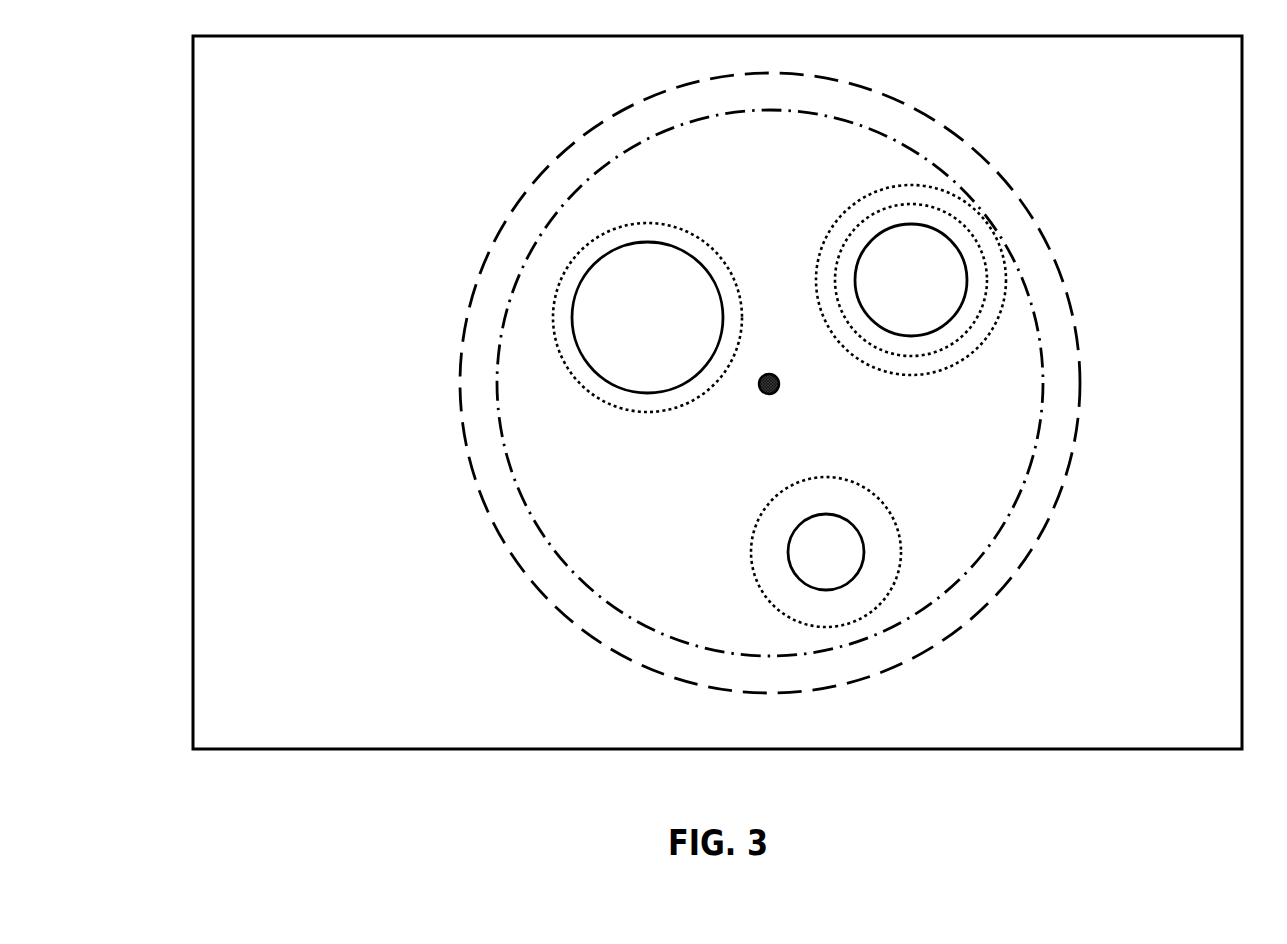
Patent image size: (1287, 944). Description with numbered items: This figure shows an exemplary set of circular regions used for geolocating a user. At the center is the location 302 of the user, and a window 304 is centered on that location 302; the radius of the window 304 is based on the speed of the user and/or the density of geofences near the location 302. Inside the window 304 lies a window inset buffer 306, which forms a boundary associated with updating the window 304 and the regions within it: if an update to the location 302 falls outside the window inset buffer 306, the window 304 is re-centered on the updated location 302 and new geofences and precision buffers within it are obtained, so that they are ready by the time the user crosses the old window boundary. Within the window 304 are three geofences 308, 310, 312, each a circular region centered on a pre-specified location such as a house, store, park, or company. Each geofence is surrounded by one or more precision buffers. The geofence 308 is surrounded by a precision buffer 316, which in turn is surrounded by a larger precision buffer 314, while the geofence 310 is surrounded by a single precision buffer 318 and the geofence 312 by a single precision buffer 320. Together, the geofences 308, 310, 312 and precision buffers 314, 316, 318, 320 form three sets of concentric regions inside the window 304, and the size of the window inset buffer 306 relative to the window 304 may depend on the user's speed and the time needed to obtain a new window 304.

The location 302 is at (772, 394).
The window 304 is at (562, 153).
The window inset buffer 306 is at (513, 283).
The geofence 308 is at (945, 325).
The geofence 310 is at (600, 378).
The geofence 312 is at (789, 552).
The precision buffer 314 is at (903, 187).
The precision buffer 316 is at (948, 213).
The precision buffer 318 is at (553, 333).
The precision buffer 320 is at (832, 628).